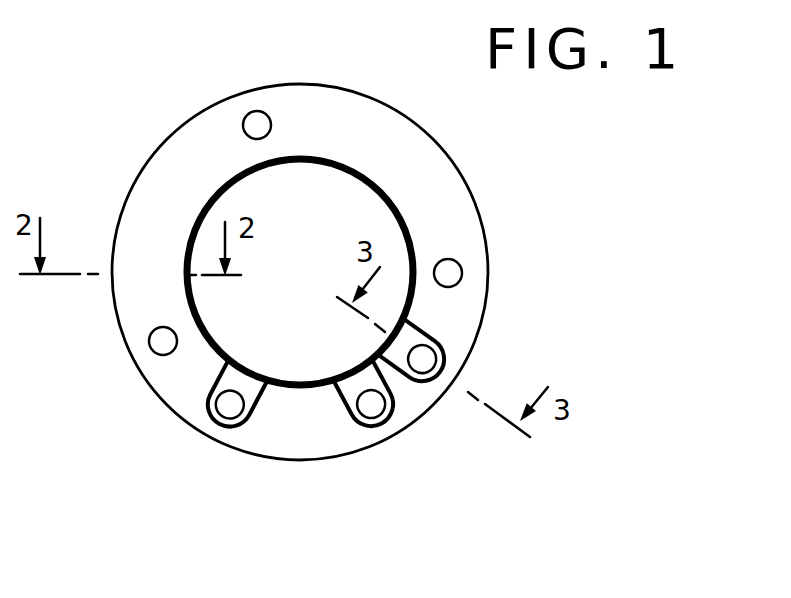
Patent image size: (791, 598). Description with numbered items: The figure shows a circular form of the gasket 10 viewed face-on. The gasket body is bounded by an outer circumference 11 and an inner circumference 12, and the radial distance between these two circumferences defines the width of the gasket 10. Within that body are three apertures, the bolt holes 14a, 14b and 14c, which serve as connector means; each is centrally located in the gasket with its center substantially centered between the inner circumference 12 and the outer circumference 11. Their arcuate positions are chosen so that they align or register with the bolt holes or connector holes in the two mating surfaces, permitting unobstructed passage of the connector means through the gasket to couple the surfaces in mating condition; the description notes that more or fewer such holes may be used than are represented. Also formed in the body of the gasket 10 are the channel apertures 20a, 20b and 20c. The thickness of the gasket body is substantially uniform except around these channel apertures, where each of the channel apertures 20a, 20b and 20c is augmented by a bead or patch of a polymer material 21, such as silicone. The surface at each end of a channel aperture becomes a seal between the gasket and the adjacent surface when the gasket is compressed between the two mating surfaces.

The gasket 10 is at (130, 148).
The outer circumference 11 is at (195, 108).
The inner circumference 12 is at (318, 157).
The bolt hole 14a is at (257, 111).
The bolt hole 14b is at (462, 273).
The bolt hole 14c is at (149, 345).
The channel aperture 20a is at (436, 360).
The channel aperture 20b is at (375, 418).
The channel aperture 20c is at (228, 417).
The polymer material patch 21 is at (388, 347).